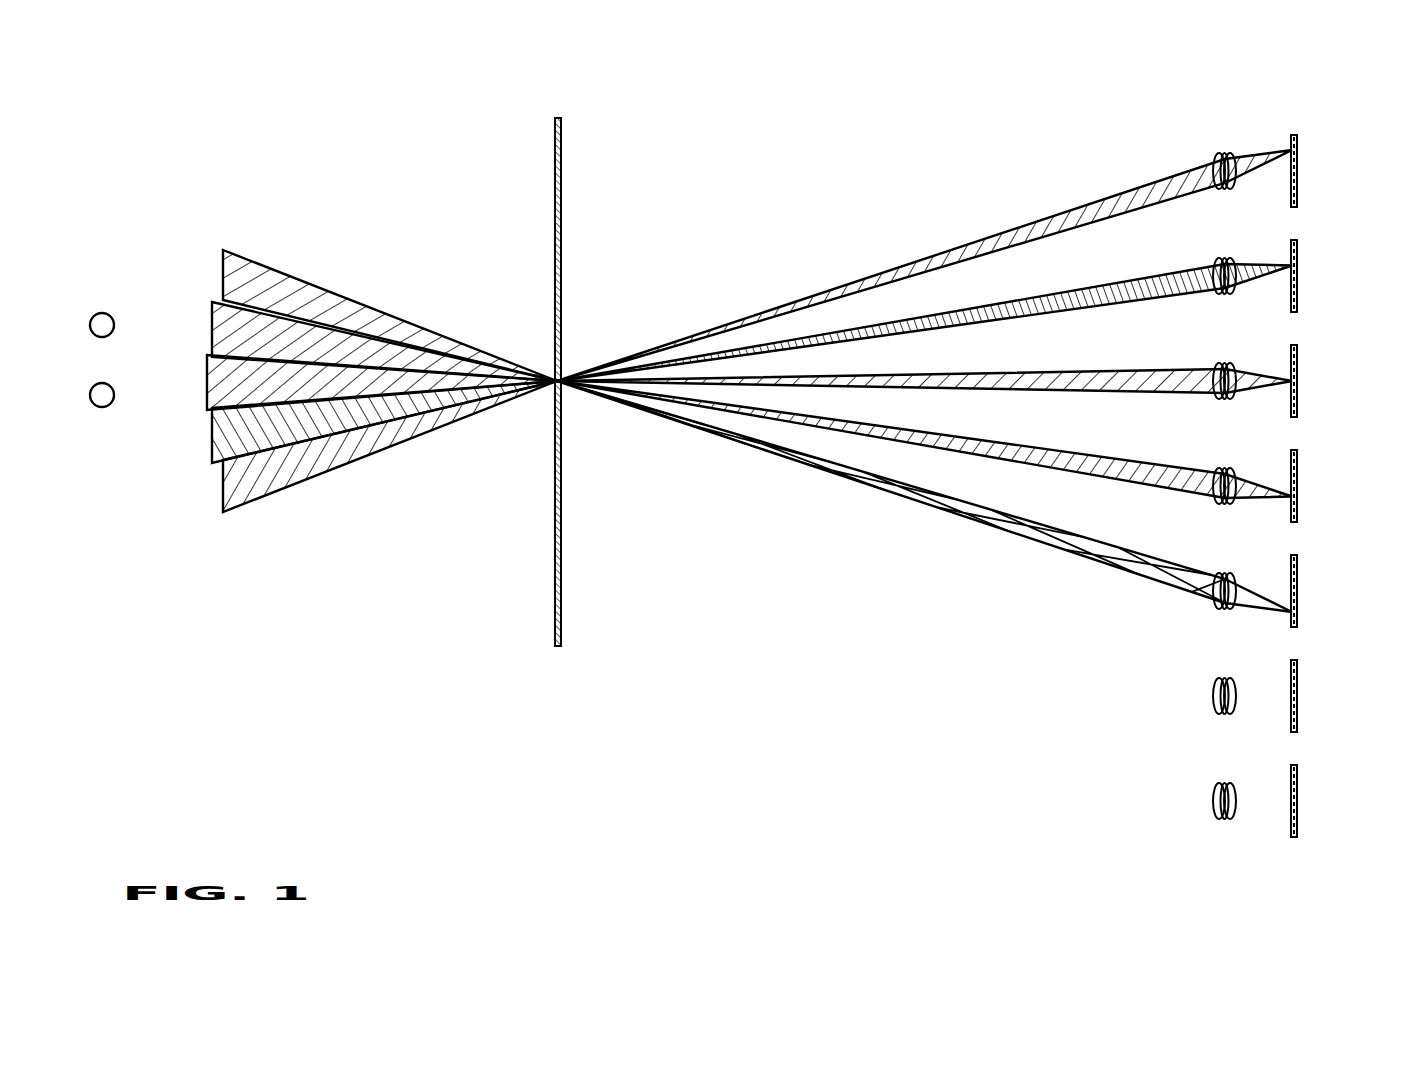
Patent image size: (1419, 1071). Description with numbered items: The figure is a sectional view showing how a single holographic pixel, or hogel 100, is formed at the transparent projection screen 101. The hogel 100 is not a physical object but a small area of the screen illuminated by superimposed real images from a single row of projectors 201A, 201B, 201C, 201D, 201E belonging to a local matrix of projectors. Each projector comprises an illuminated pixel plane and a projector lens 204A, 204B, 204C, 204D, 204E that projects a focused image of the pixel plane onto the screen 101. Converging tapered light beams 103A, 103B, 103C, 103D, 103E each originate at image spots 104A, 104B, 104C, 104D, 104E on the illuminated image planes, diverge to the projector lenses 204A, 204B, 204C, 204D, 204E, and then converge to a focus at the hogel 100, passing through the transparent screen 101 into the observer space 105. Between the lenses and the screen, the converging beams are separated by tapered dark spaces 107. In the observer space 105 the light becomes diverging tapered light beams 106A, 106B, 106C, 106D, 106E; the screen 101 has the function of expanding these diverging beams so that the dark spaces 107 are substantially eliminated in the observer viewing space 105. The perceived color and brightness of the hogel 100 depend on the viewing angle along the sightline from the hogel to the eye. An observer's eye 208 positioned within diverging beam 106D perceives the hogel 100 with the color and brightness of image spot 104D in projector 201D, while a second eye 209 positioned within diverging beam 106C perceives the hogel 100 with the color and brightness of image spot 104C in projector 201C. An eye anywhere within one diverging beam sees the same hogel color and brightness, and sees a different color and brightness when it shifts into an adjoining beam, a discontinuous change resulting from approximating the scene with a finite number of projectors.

The hogel 100 is at (560, 387).
The transparent projection screen 101 is at (558, 118).
The tapered light beam 103A is at (1092, 208).
The tapered light beam 103B is at (1130, 287).
The tapered light beam 103C is at (1142, 373).
The tapered light beam 103D is at (1133, 462).
The tapered light beam 103E is at (1122, 548).
The spot 104A is at (1290, 150).
The spot 104B is at (1292, 263).
The spot 104C is at (1292, 378).
The spot 104D is at (1292, 497).
The spot 104E is at (1292, 617).
The observer space 105 is at (135, 510).
The diverging tapered light beam 106A is at (295, 467).
The diverging tapered light beam 106B is at (365, 410).
The diverging tapered light beam 106C is at (387, 380).
The diverging tapered light beam 106D is at (290, 342).
The diverging tapered light beam 106E is at (265, 290).
The tapered dark space 107 is at (1002, 292).
The projector 201A is at (1267, 157).
The projector 201B is at (1273, 264).
The projector 201C is at (1274, 368).
The projector 201D is at (1276, 482).
The projector 201E is at (1280, 589).
The projector lens 204A is at (1217, 155).
The projector lens 204B is at (1218, 257).
The projector lens 204C is at (1218, 365).
The projector lens 204D is at (1218, 475).
The projector lens 204E is at (1218, 577).
The observer's eye 208 is at (111, 335).
The second eye 209 is at (111, 405).